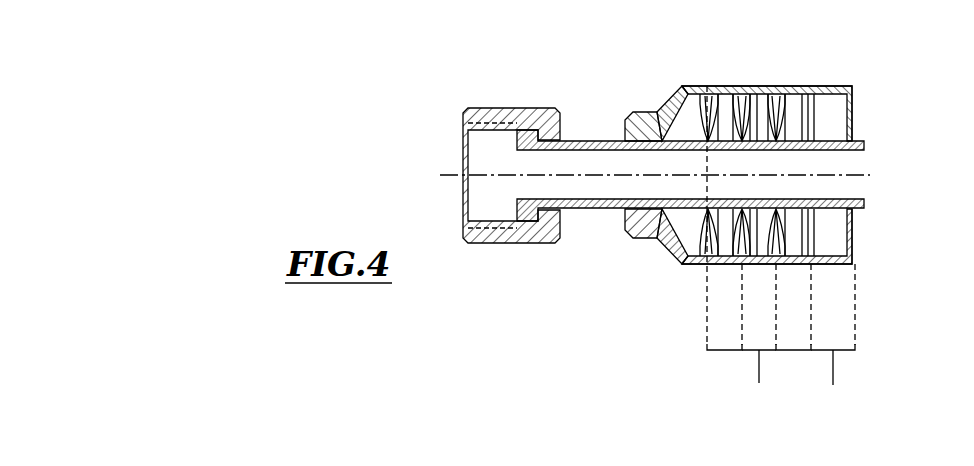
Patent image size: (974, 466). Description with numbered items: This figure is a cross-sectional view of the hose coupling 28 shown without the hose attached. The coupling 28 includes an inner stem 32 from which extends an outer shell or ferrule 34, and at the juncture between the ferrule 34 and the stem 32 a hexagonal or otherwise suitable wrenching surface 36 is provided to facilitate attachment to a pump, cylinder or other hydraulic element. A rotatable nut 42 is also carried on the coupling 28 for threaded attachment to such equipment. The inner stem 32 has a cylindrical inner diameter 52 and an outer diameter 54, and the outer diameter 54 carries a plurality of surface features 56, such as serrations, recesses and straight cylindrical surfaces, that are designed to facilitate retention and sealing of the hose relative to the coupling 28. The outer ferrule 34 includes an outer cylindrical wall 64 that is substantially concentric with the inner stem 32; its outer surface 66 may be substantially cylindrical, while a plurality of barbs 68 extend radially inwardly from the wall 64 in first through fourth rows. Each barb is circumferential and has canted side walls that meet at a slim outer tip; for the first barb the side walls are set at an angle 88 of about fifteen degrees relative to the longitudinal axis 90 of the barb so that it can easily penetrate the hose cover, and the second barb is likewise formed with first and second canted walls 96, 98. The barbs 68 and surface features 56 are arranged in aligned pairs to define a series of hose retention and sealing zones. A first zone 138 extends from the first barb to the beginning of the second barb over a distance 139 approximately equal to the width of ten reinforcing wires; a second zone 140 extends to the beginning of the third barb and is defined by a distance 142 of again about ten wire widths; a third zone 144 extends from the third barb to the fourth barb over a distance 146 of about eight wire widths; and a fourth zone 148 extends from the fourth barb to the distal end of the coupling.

The first coupling 28 is at (876, 92).
The inner stem 32 is at (572, 209).
The outer ferrule 34 is at (680, 86).
The wrenching surface 36 is at (640, 113).
The rotatable nut 42 is at (481, 243).
The cylindrical inner diameter 52 is at (824, 150).
The outer diameter 54 is at (838, 207).
The surface features 56 is at (840, 264).
The outer cylindrical wall 64 is at (687, 86).
The outer surface 66 is at (762, 88).
The barbs 68 is at (812, 257).
The angle 88 is at (713, 125).
The longitudinal axis 90 is at (705, 177).
The first canted wall 96 is at (730, 88).
The second canted wall 98 is at (748, 112).
The first zone 138 is at (724, 230).
The distance 139 is at (722, 93).
The second zone 140 is at (758, 336).
The distance 142 is at (773, 88).
The third zone 144 is at (793, 320).
The distance 146 is at (807, 88).
The fourth zone 148 is at (833, 334).